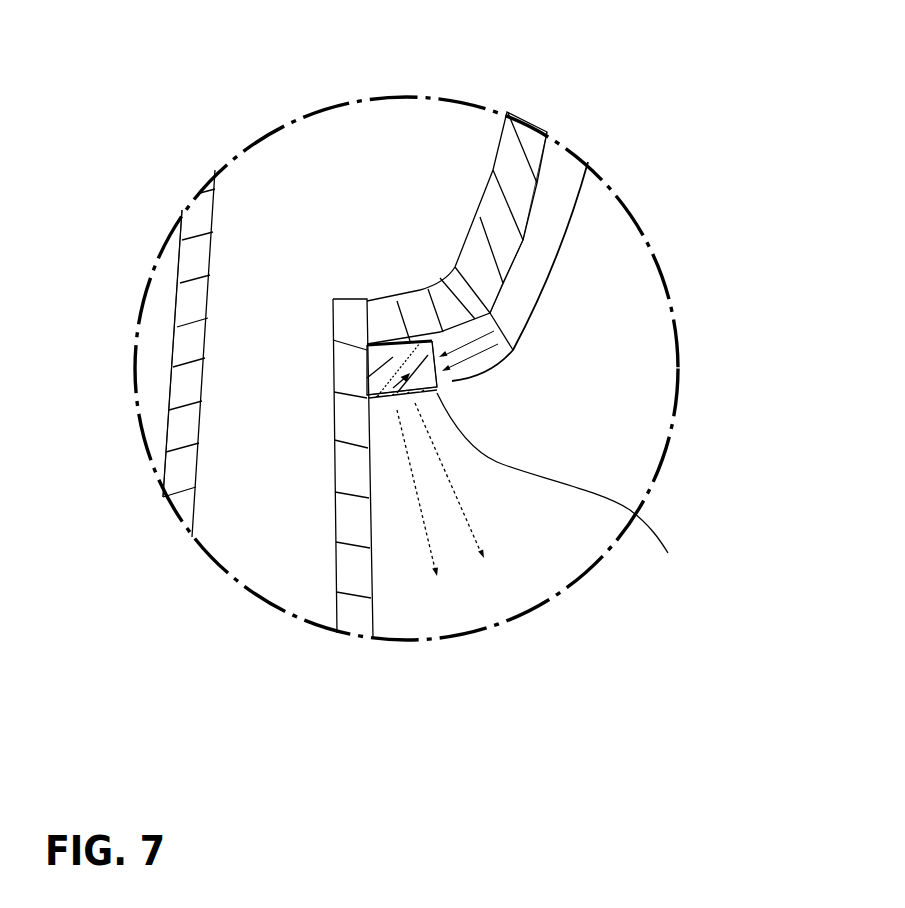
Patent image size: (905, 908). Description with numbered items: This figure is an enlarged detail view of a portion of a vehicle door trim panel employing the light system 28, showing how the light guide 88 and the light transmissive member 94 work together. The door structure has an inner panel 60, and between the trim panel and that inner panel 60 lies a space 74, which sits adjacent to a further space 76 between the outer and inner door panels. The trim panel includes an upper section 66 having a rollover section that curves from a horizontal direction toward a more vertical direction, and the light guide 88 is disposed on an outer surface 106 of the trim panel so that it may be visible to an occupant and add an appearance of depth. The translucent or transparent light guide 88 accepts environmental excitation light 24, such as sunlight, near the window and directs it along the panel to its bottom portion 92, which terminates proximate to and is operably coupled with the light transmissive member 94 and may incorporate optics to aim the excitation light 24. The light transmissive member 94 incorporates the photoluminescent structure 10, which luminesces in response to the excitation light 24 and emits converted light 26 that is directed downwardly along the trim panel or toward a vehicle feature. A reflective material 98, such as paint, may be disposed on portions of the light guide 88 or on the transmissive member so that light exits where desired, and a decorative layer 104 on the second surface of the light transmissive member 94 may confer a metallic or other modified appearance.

The photoluminescent structure 10 is at (398, 393).
The excitation light 24 is at (498, 344).
The converted light 26 is at (467, 520).
The light system 28 is at (564, 104).
The inner panel 60 is at (180, 430).
The upper section 66 is at (490, 173).
The space 74 is at (341, 188).
The space 76 is at (150, 355).
The light guide 88 is at (527, 277).
The bottom portion 92 is at (457, 382).
The light transmissive member 94 is at (393, 357).
The reflective material 98 is at (390, 343).
The decorative layer 104 is at (564, 490).
The outer surface 106 is at (533, 205).